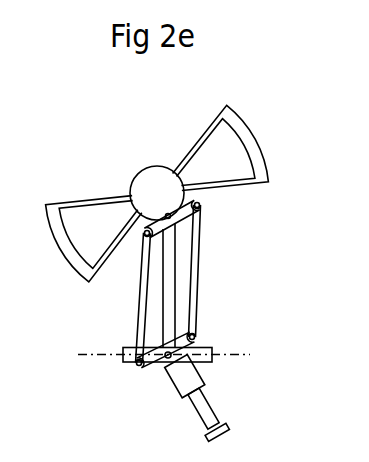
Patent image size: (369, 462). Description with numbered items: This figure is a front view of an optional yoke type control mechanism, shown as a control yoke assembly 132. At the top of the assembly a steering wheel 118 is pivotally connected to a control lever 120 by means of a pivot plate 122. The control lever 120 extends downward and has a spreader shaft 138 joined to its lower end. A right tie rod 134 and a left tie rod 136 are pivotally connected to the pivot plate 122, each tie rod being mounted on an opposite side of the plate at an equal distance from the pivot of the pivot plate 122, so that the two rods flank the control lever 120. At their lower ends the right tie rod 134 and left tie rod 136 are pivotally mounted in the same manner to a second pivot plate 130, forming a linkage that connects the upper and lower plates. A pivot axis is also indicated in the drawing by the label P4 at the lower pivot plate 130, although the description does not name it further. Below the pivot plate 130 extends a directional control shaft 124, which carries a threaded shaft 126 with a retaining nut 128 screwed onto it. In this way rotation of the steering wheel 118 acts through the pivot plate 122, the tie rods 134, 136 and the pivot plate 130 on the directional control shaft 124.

The steering wheel 118 is at (263, 138).
The control lever 120 is at (180, 248).
The pivot plate 122 is at (200, 205).
The directional control shaft 124 is at (168, 388).
The threaded shaft 126 is at (217, 402).
The retaining nut 128 is at (233, 427).
The pivot plate 130 is at (133, 372).
The control yoke assembly 132 is at (125, 154).
The right tie rod 134 is at (202, 280).
The left tie rod 136 is at (132, 298).
The spreader shaft 138 is at (208, 342).
The pivot axis P4 is at (245, 363).